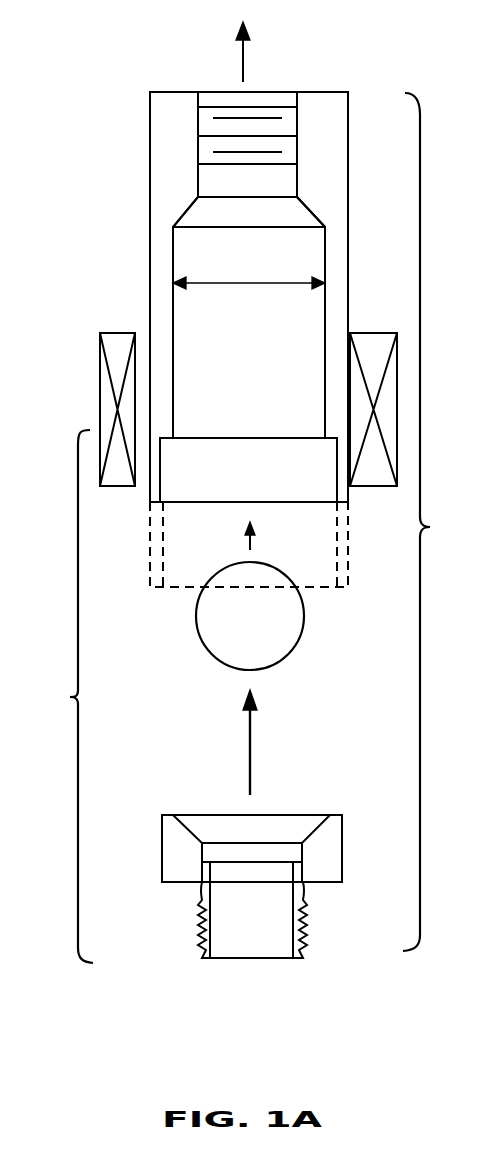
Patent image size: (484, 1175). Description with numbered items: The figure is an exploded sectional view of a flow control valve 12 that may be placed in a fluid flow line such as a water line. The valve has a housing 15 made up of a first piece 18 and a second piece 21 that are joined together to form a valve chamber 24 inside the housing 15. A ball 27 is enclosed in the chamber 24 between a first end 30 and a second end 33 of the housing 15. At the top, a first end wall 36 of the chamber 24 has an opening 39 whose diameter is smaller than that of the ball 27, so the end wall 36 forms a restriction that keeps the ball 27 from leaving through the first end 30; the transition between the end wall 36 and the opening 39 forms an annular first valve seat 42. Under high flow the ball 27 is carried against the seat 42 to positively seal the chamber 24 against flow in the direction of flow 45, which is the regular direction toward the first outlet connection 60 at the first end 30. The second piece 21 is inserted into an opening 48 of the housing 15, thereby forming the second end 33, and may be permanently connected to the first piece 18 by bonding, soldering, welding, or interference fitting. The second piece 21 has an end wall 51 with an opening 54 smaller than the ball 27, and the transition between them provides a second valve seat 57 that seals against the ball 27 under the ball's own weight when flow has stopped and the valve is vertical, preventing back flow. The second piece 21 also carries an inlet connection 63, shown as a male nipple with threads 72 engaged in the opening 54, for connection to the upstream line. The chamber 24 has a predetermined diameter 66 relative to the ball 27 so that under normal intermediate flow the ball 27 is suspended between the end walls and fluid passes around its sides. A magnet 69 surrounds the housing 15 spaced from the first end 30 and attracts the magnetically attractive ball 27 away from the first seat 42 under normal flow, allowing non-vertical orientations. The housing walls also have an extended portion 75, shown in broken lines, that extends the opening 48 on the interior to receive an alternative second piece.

The housing 15 is at (113, 82).
The flow control valve 12 is at (434, 522).
The first piece 18 is at (150, 206).
The second piece 21 is at (162, 838).
The valve chamber 24 is at (160, 630).
The ball 27 is at (295, 623).
The first end 30 is at (172, 188).
The second end 33 is at (63, 696).
The first end wall 36 is at (193, 215).
The opening 39 is at (280, 200).
The first valve seat 42 is at (300, 196).
The direction of flow 45 is at (245, 33).
The opening 48 is at (163, 483).
The end wall 51 is at (308, 830).
The opening 54 is at (290, 851).
The second valve seat 57 is at (200, 838).
The first outlet connection 60 is at (218, 56).
The inlet connection 63 is at (306, 965).
The predetermined diameter 66 is at (252, 286).
The magnet 69 is at (100, 387).
The threads 72 is at (305, 896).
The extended portion 75 is at (350, 553).